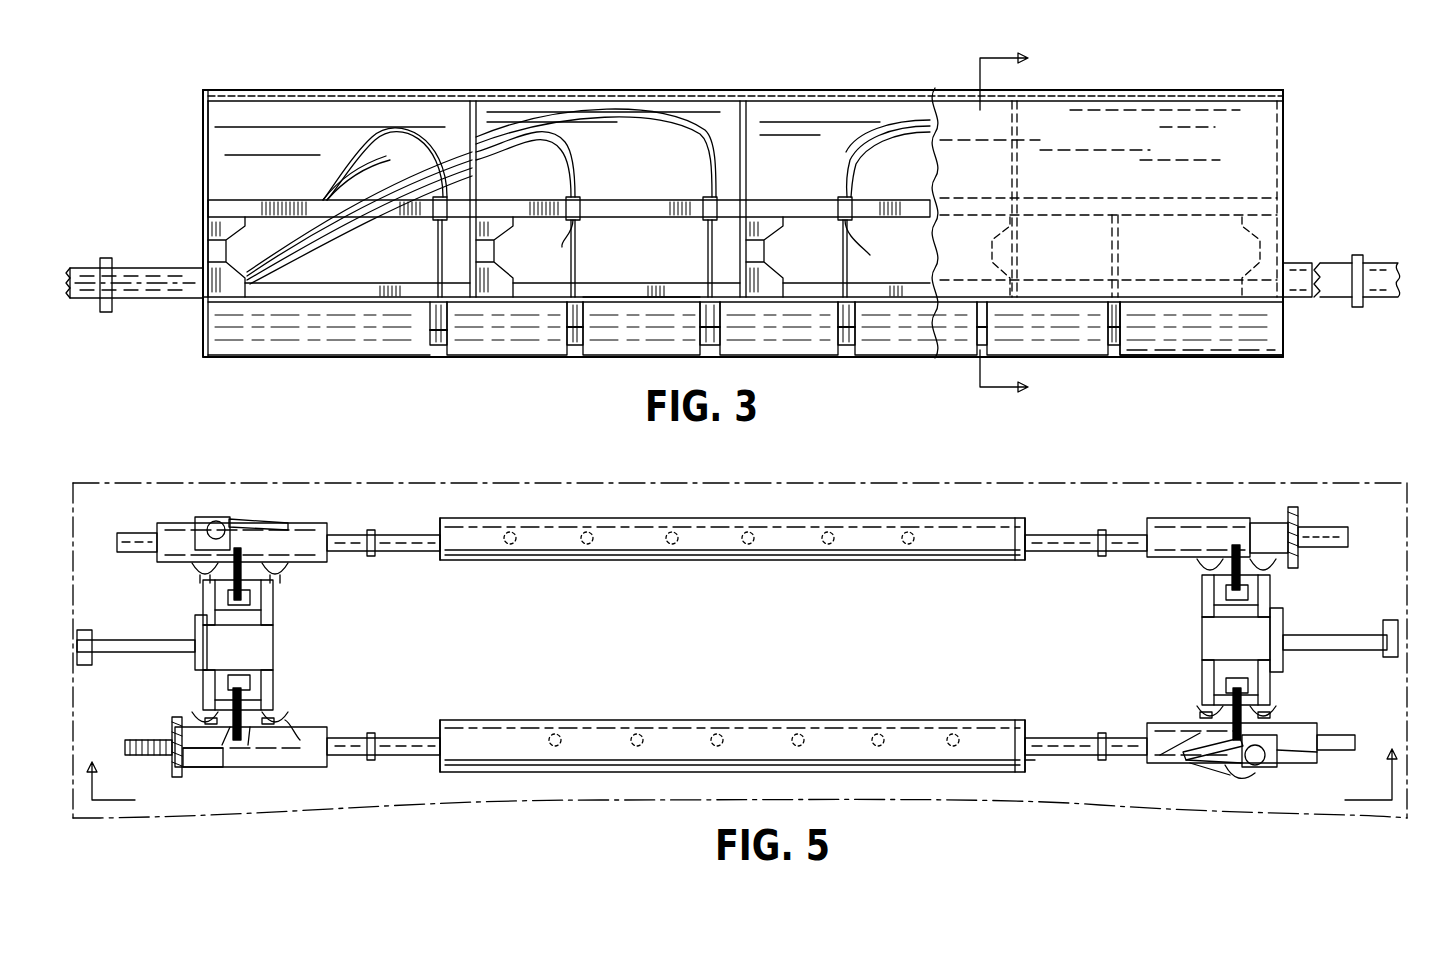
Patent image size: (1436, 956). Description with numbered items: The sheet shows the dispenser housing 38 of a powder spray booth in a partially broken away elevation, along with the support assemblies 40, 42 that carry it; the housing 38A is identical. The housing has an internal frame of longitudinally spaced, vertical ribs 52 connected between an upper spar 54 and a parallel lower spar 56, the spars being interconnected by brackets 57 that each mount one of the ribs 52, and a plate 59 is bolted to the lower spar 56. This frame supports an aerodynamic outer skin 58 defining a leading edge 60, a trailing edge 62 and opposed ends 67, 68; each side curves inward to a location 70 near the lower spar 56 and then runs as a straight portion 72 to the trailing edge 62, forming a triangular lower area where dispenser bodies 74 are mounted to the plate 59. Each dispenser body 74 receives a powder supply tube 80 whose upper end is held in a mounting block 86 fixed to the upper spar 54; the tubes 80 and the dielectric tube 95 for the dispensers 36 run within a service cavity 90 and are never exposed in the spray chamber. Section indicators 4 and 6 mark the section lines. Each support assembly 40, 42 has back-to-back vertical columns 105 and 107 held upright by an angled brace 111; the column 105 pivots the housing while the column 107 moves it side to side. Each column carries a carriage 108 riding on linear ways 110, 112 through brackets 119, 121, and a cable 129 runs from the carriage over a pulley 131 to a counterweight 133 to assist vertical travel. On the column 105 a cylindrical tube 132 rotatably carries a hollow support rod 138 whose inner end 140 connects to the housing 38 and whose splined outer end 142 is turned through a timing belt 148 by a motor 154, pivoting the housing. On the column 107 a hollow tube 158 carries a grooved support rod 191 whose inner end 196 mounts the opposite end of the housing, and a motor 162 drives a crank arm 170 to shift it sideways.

In FIG. 3, the section line 4- 4 is at (1022, 223).
In FIG. 5, the section line 6- 6 is at (742, 776).
In FIG. 3, the dispenser 36 is at (434, 333).
In FIG. 5, the dispenser 36 is at (549, 560).
In FIG. 3, the dispenser housing 38 is at (1232, 132).
In FIG. 5, the dispenser housing 38 is at (1012, 712).
In FIG. 5, the dispenser housing 38A is at (1017, 566).
In FIG. 5, the support assembly 40 is at (275, 695).
In FIG. 5, the support assembly 42 is at (1201, 683).
In FIG. 3, the rib 52 is at (212, 108).
In FIG. 3, the upper spar 54 is at (635, 217).
In FIG. 3, the lower spar 56 is at (614, 287).
In FIG. 3, the bracket 57 is at (216, 233).
In FIG. 3, the outer skin 58 is at (933, 98).
In FIG. 5, the outer skin 58 is at (961, 561).
In FIG. 3, the plate 59 is at (601, 297).
In FIG. 3, the leading edge 60 is at (847, 90).
In FIG. 5, the leading edge 60 is at (783, 548).
In FIG. 3, the trailing edge 62 is at (803, 358).
In FIG. 3, the end 67 is at (203, 176).
In FIG. 5, the end 67 is at (441, 565).
In FIG. 3, the end 68 is at (1288, 155).
In FIG. 5, the end 68 is at (1040, 528).
In FIG. 3, the location 70 is at (1179, 297).
In FIG. 3, the straight portion 72 is at (1223, 342).
In FIG. 3, the dispenser body 74 is at (567, 316).
In FIG. 3, the powder supply tube 80 is at (438, 264).
In FIG. 3, the mounting block 86 is at (697, 200).
In FIG. 3, the service cavity 90 is at (428, 113).
In FIG. 3, the dielectric tube 95 is at (348, 168).
In FIG. 5, the vertical column 105 is at (274, 684).
In FIG. 5, the vertical column 107 is at (283, 618).
In FIG. 5, the carriage 108 is at (284, 580).
In FIG. 5, the linear way 110 is at (205, 718).
In FIG. 5, the angled brace 111 is at (153, 642).
In FIG. 5, the linear way 112 is at (265, 727).
In FIG. 5, the bracket 119 is at (195, 767).
In FIG. 5, the bracket 121 is at (300, 740).
In FIG. 5, the cable 129 is at (240, 745).
In FIG. 5, the pulley 131 is at (250, 745).
In FIG. 5, the cylindrical tube 132 is at (318, 735).
In FIG. 5, the counterweight 133 is at (238, 678).
In FIG. 3, the hollow support rod 138 is at (91, 270).
In FIG. 5, the hollow support rod 138 is at (366, 760).
In FIG. 3, the inner end 140 is at (193, 303).
In FIG. 5, the inner end 140 is at (421, 755).
In FIG. 5, the outer end 142 is at (140, 742).
In FIG. 5, the timing belt 148 is at (178, 777).
In FIG. 5, the motor 154 is at (190, 778).
In FIG. 5, the hollow tube 158 is at (1300, 735).
In FIG. 5, the motor 162 is at (1246, 775).
In FIG. 5, the crank arm 170 is at (1213, 765).
In FIG. 3, the support rod 191 is at (1389, 303).
In FIG. 5, the support rod 191 is at (1110, 752).
In FIG. 5, the inner end 196 is at (1039, 775).